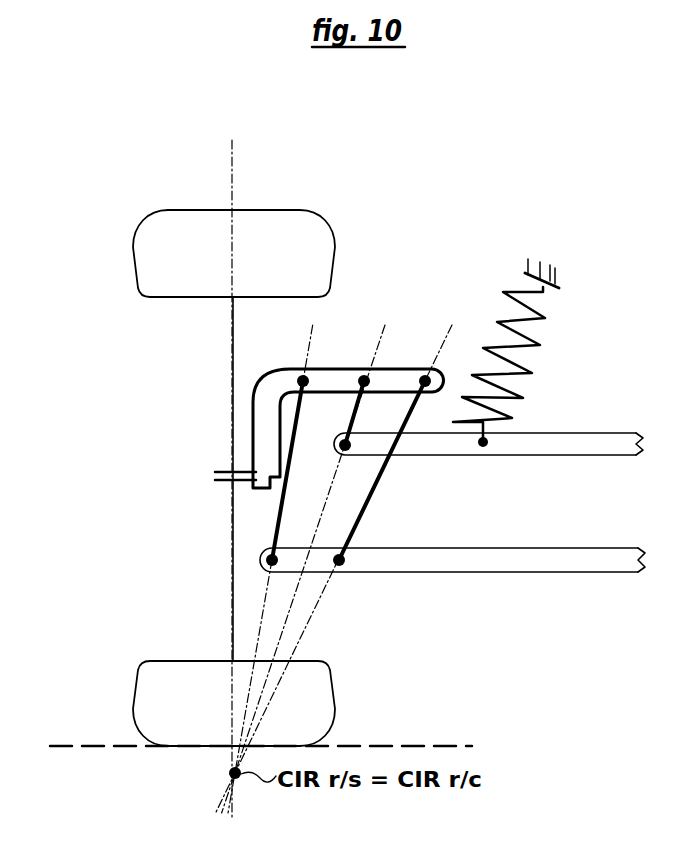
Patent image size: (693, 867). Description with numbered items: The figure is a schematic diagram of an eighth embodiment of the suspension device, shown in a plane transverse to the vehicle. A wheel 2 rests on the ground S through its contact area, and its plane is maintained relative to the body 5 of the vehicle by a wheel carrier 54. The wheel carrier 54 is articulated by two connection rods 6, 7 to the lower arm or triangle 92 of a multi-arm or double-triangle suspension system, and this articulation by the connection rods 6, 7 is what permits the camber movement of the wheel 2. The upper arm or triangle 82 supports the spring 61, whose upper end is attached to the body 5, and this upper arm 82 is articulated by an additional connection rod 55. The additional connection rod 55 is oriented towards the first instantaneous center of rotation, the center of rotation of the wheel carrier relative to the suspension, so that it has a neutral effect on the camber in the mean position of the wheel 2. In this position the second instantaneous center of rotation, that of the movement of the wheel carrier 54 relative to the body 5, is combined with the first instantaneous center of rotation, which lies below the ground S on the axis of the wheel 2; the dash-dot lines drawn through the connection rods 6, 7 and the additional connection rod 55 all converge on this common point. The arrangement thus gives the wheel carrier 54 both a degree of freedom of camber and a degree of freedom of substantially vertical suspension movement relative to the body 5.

The wheel 2 is at (232, 603).
The wheel carrier 54 is at (328, 378).
The additional connection rod 55 is at (351, 437).
The connection rod 6 is at (285, 494).
The connection rod 7 is at (373, 493).
The spring 61 is at (497, 322).
The body 5 is at (556, 266).
The upper arm or triangle 82 is at (598, 448).
The lower arm or triangle 92 is at (527, 562).
The ground S is at (412, 743).